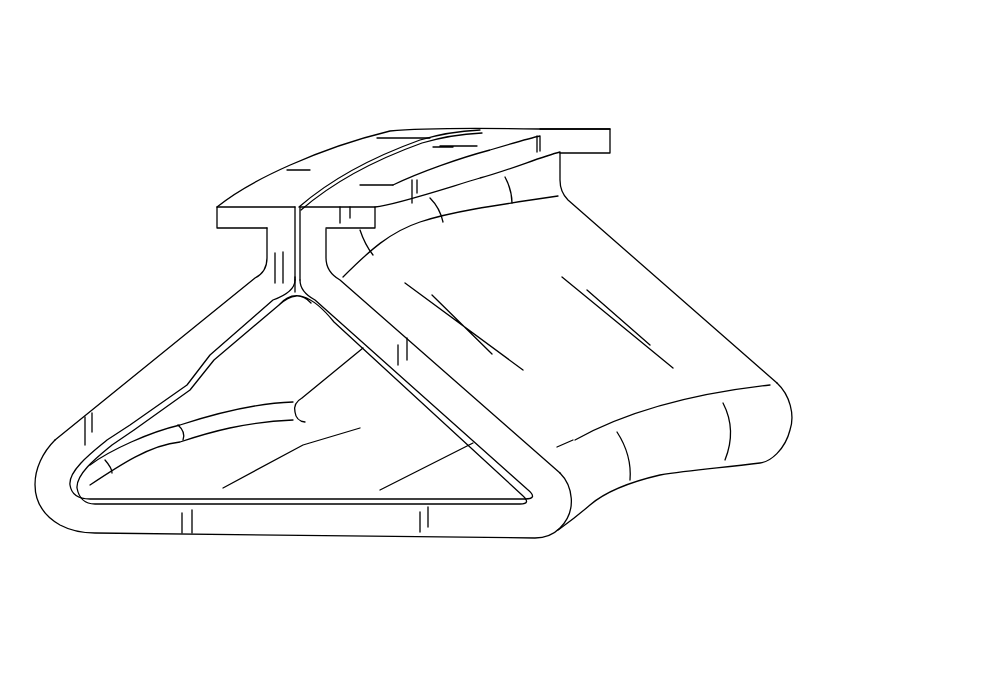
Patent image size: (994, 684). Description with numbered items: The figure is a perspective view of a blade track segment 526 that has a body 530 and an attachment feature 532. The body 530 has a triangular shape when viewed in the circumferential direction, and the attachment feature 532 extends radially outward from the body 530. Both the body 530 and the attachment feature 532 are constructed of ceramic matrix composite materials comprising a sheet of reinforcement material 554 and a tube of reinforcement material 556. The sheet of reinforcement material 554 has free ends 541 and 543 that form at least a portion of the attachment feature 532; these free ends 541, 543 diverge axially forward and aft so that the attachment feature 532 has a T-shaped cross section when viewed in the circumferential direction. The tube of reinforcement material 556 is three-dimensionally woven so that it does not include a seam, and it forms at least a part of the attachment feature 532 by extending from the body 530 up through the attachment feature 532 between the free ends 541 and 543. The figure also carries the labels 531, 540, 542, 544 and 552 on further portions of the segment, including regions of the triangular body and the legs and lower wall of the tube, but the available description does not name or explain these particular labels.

The blade track segment 526 is at (710, 72).
The body 530 is at (738, 310).
The inner rib 531 is at (354, 498).
The attachment feature 532 is at (668, 190).
The triangular tube body 540 is at (122, 340).
The free end 541 is at (190, 211).
The groove 542 is at (546, 365).
The free end 543 is at (392, 216).
The bottom wall 544 is at (206, 550).
The left leg 552 is at (243, 245).
The sheet of reinforcement material 554 is at (553, 482).
The tube of reinforcement material 556 is at (503, 505).